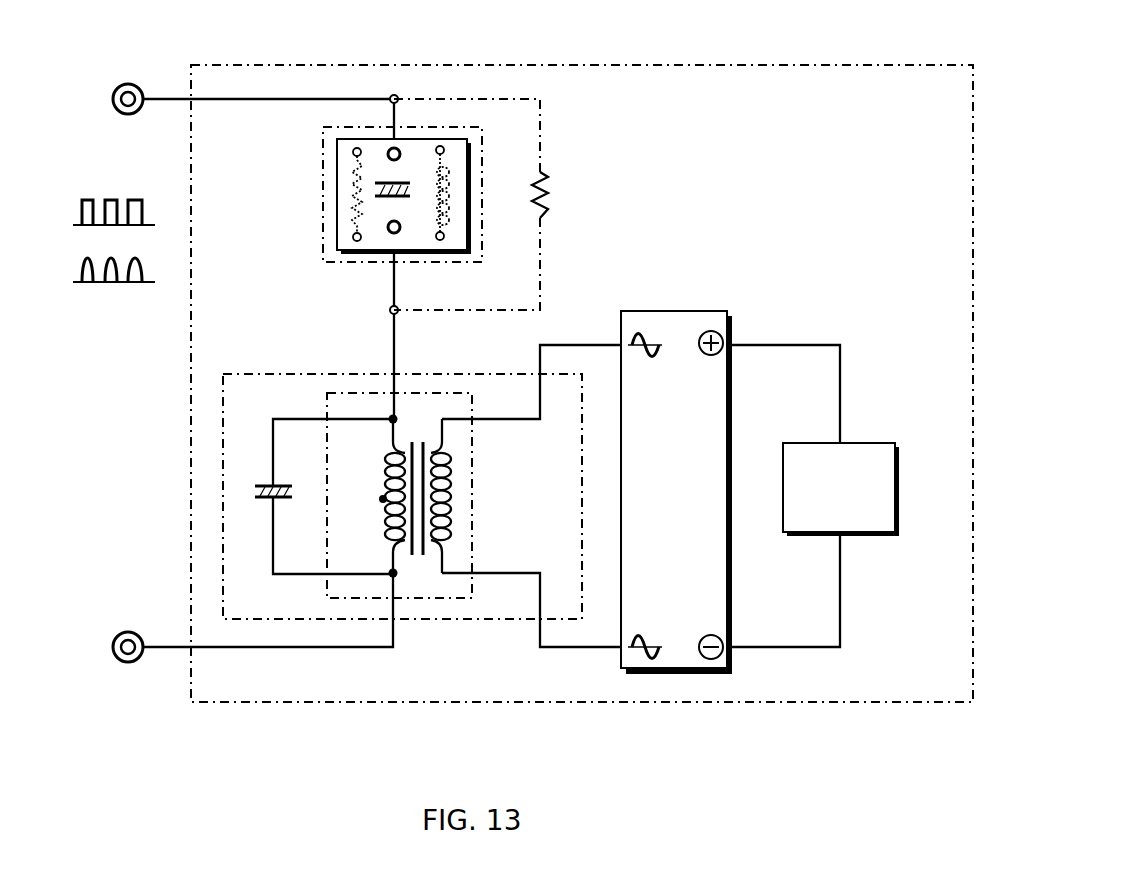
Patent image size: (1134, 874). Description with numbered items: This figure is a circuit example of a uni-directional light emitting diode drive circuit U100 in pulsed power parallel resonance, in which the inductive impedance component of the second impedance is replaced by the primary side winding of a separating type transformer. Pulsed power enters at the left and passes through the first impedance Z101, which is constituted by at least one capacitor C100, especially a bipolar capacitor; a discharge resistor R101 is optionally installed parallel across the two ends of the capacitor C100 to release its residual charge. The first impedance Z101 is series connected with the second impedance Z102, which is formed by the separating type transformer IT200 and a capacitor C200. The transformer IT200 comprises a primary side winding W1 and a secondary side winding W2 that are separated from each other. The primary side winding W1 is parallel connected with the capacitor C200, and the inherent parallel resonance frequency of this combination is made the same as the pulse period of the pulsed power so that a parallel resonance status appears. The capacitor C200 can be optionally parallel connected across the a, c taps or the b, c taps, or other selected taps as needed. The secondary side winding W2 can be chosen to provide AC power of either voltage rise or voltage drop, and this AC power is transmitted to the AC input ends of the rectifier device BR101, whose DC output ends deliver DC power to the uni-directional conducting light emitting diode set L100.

The uni-directional light emitting diode drive circuit U100 is at (797, 65).
The first impedance Z101 is at (320, 209).
The capacitor C100 is at (382, 197).
The discharge resistor R101 is at (507, 204).
The second impedance Z102 is at (358, 373).
The capacitor C200 is at (257, 483).
The separating type transformer IT200 is at (472, 469).
The primary side winding W1 is at (387, 520).
The secondary side winding W2 is at (448, 498).
The tap a is at (409, 422).
The tap b is at (366, 497).
The tap c is at (407, 576).
The rectifier device BR101 is at (683, 311).
The uni-directional conducting light emitting diode set L100 is at (897, 463).